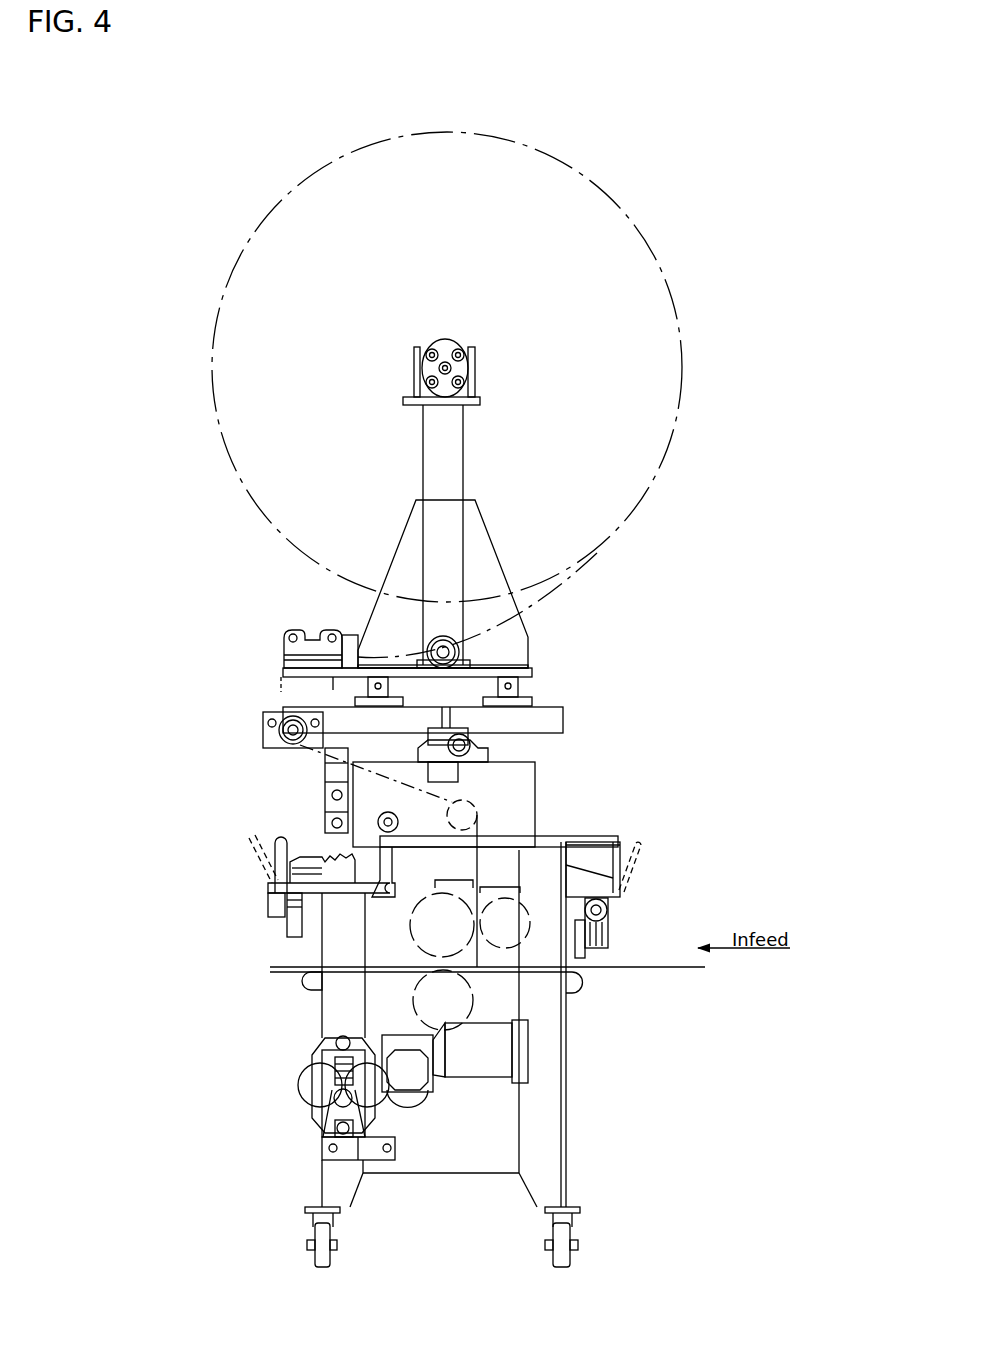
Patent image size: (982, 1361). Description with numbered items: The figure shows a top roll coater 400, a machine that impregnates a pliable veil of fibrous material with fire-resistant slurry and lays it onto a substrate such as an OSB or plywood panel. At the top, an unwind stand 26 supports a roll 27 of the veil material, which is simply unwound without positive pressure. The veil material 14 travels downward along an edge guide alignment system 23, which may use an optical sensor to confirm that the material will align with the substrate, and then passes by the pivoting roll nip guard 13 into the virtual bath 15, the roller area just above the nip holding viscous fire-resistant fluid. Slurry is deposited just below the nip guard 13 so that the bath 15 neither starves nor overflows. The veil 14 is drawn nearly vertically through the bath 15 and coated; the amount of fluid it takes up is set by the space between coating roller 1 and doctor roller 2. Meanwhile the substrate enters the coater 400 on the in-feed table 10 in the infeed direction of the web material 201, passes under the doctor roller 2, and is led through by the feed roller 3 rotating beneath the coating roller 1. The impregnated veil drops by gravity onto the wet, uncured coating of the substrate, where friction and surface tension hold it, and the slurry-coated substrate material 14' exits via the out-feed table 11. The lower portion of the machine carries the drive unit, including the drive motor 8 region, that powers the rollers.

The top roll coater 400 is at (448, 112).
The roll 27 is at (557, 155).
The unwind stand 26 is at (437, 332).
The edge guide alignment system 23 is at (540, 660).
The material 14 is at (562, 829).
The pivoting roll nip guard 13 is at (494, 881).
The strip material 201 is at (654, 966).
The virtual bath 15 is at (264, 910).
The slurry-coated substrate material 14' is at (269, 906).
The out-feed table 11 is at (296, 982).
The coating roller 1 is at (415, 953).
The doctor roller 2 is at (504, 976).
The feed roller 3 is at (400, 998).
The drive motor 8 is at (531, 1073).
The in-feed table 10 is at (581, 989).